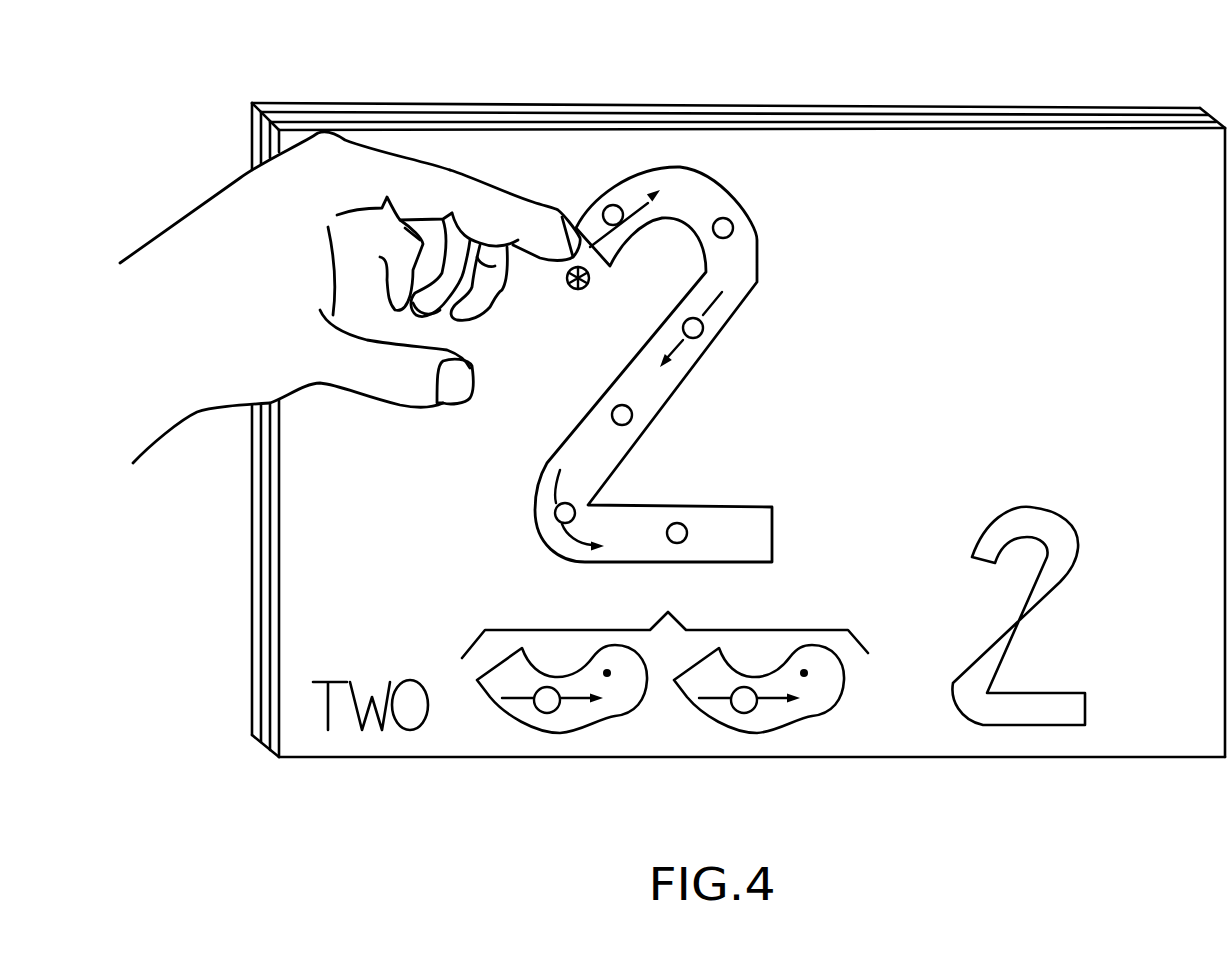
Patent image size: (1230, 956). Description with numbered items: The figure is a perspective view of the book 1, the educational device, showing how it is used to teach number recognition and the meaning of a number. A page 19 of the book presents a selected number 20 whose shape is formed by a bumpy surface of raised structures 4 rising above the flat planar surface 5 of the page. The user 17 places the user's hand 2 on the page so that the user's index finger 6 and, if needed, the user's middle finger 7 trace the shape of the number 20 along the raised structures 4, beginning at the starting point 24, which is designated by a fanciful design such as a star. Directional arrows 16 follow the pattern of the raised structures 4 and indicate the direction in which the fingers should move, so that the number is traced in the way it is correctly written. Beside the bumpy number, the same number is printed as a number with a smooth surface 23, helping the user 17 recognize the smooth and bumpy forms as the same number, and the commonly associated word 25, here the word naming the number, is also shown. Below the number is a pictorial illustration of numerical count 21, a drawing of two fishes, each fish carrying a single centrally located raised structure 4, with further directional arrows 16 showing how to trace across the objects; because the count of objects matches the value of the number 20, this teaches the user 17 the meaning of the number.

The book 1 is at (1112, 94).
The user's hand 2 is at (197, 224).
The raised structures 4 is at (608, 207).
The book with planar surface 5 is at (897, 727).
The user's index finger 6 is at (489, 193).
The user's middle finger 7 is at (488, 300).
The directional arrows 16 is at (637, 207).
The user 17 is at (195, 425).
The page 19 is at (980, 394).
The number with bumpy surface 20 is at (520, 468).
The pictorial illustration of numerical count 21 is at (665, 656).
The number with smooth surface 23 is at (1043, 713).
The starting points 24 is at (580, 290).
The commonly associated word with a selected number 25 is at (388, 735).